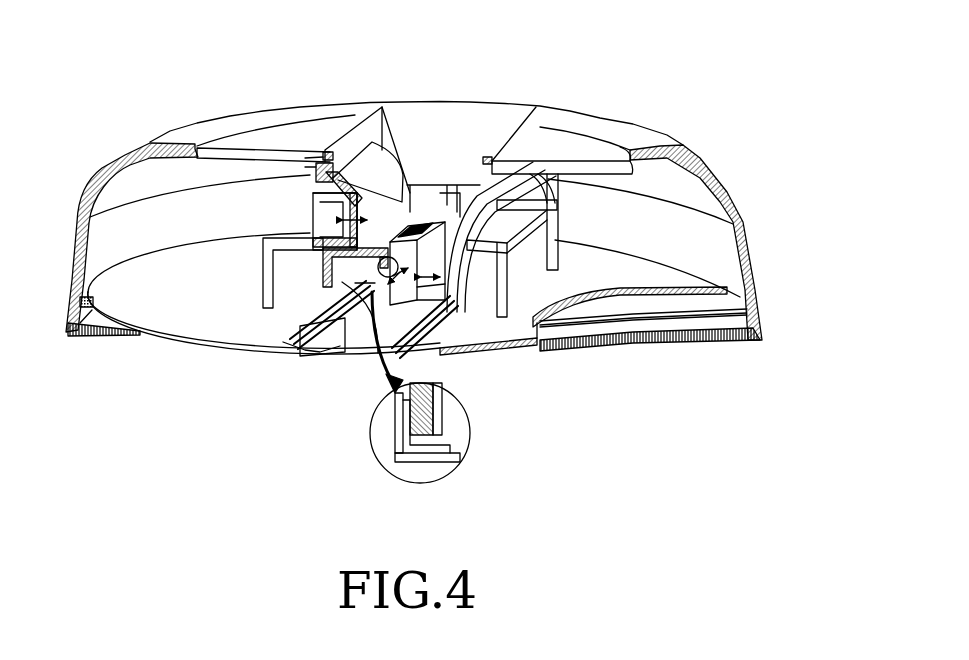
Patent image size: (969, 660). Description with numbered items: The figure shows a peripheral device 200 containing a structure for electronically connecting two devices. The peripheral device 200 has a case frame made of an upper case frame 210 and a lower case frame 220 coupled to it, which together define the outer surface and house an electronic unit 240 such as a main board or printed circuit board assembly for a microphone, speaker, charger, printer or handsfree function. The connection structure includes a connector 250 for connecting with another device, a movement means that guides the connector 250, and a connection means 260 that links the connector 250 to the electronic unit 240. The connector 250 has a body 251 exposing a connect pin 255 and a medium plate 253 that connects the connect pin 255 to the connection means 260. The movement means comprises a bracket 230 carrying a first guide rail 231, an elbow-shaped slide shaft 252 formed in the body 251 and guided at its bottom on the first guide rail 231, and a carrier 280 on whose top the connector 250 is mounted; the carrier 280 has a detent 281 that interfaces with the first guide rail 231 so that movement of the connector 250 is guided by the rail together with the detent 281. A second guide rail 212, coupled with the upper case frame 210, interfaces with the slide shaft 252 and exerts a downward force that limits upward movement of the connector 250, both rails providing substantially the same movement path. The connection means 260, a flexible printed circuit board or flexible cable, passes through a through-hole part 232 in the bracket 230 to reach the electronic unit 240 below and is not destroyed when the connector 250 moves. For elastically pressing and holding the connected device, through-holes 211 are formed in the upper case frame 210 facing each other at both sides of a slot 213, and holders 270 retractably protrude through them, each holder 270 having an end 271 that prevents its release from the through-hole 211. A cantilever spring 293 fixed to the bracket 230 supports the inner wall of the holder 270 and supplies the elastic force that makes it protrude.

The peripheral device 200 is at (447, 265).
The upper case frame 210 is at (748, 206).
The through-holes 211 is at (350, 205).
The second guide rail 212 is at (420, 422).
The slot 213 is at (473, 138).
The lower case frame 220 is at (722, 346).
The bracket 230 is at (499, 358).
The first guide rail 231 is at (300, 336).
The through-hole part 232 is at (320, 350).
The electronic unit 240 is at (611, 319).
The connector 250 is at (397, 240).
The body 251 is at (460, 430).
The elbow-shaped slide shaft 252 is at (400, 418).
The medium plate 253 is at (377, 452).
The connect pin 255 is at (400, 222).
The connection means 260 is at (350, 348).
The holder 270 is at (443, 205).
The end 271 is at (317, 167).
The carrier 280 is at (323, 262).
The detent 281 is at (367, 278).
The cantilever spring 293 is at (558, 222).